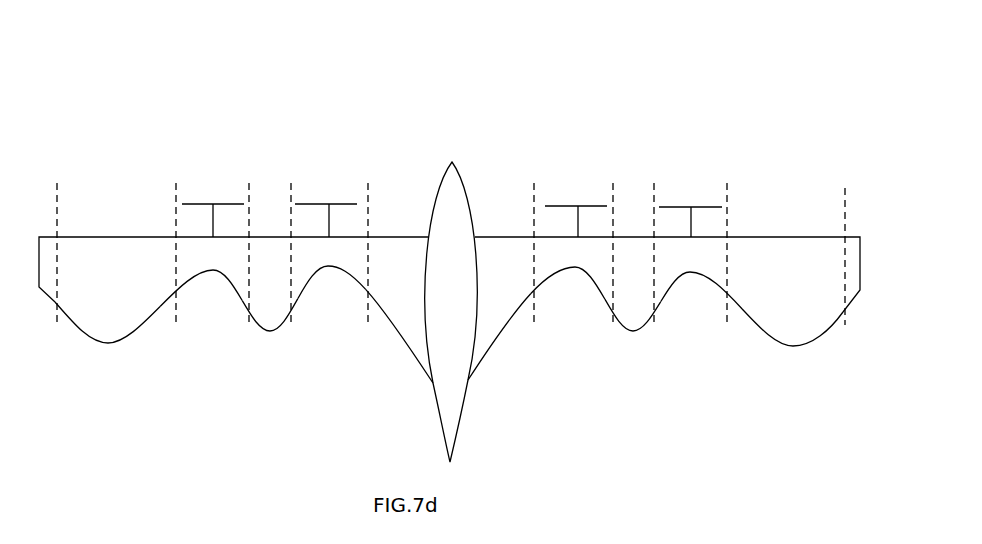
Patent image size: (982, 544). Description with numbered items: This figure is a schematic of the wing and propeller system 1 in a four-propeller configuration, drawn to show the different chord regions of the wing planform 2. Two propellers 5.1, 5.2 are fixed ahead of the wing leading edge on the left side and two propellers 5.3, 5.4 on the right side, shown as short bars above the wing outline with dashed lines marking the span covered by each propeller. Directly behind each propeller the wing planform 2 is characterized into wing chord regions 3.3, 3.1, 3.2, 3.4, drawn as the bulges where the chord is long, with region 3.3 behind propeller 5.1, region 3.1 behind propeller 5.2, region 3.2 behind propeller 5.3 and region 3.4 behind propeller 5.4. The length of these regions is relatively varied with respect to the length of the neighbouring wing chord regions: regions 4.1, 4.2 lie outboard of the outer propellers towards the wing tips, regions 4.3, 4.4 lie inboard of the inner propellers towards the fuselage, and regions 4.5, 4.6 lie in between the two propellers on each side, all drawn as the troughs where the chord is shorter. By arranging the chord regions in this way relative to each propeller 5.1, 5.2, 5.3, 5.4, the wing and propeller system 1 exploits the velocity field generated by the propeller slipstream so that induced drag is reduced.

The wing and propeller system 1 is at (771, 80).
The wing planform 2 is at (786, 231).
The wing chord region 3.1 is at (330, 276).
The wing chord region 3.2 is at (580, 277).
The wing chord region 3.3 is at (213, 280).
The wing chord region 3.4 is at (697, 282).
The wing chord region 4.1 is at (109, 356).
The wing chord region 4.2 is at (806, 361).
The wing chord region 4.3 is at (405, 356).
The wing chord region 4.4 is at (513, 347).
The wing chord region 4.5 is at (273, 345).
The wing chord region 4.6 is at (638, 348).
The propeller 5.1 is at (213, 192).
The propeller 5.2 is at (329, 192).
The propeller 5.3 is at (580, 193).
The propeller 5.4 is at (698, 195).